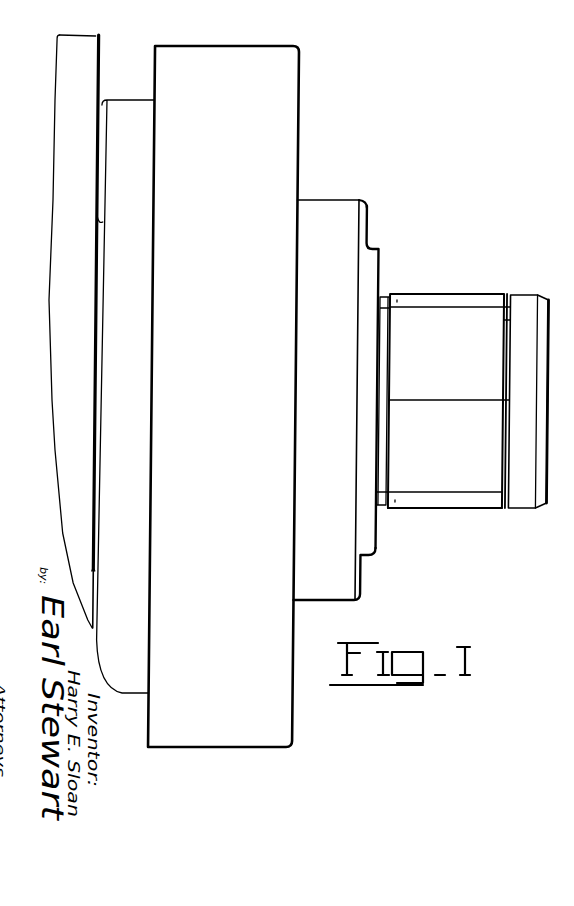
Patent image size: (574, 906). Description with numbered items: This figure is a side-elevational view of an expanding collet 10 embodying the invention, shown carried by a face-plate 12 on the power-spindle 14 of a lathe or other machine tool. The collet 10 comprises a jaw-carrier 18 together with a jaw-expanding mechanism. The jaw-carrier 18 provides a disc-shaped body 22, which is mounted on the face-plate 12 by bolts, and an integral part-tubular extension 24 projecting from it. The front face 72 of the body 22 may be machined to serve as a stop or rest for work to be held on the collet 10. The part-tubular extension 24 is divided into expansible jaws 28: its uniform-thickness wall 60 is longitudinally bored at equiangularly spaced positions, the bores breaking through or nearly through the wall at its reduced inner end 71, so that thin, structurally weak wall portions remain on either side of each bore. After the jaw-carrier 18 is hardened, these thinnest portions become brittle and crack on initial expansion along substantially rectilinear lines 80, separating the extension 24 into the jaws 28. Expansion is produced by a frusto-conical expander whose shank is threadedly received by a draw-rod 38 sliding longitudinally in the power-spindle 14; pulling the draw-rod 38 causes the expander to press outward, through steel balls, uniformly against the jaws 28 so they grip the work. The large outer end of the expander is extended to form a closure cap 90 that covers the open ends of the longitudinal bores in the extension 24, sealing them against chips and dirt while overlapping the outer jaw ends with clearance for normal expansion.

The collet 10 is at (103, 63).
The face-plate 12 is at (288, 148).
The power-spindle 14 is at (118, 256).
The jaw-carrier 18 is at (372, 203).
The body 22 is at (348, 571).
The part-tubular extension 24 is at (490, 510).
The expansible jaws 28 is at (479, 302).
The draw-rod 38 is at (573, 365).
The wall 60 is at (417, 293).
The reduced inner end 71 is at (386, 317).
The front face 72 is at (383, 267).
The crack lines 80 is at (450, 305).
The closure cap 90 is at (536, 300).